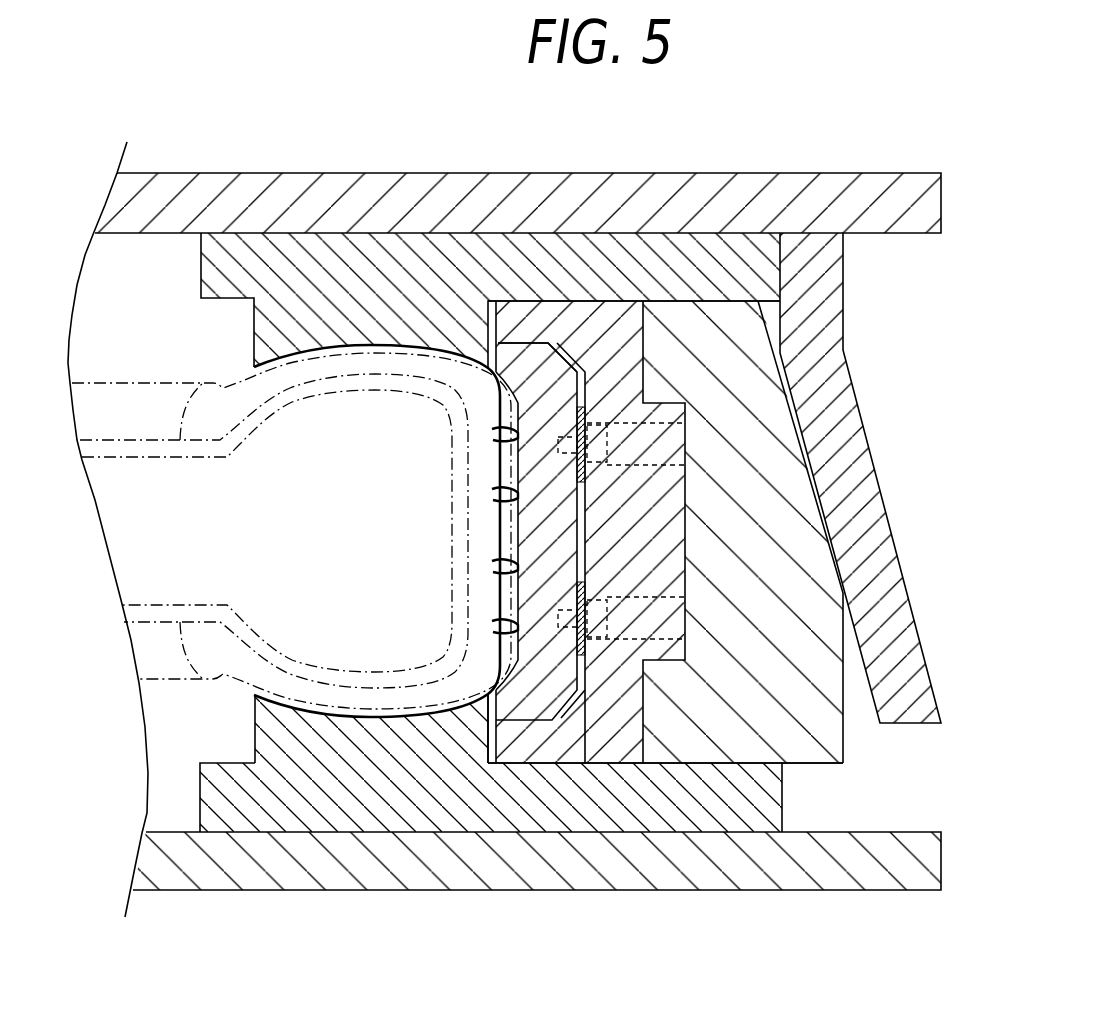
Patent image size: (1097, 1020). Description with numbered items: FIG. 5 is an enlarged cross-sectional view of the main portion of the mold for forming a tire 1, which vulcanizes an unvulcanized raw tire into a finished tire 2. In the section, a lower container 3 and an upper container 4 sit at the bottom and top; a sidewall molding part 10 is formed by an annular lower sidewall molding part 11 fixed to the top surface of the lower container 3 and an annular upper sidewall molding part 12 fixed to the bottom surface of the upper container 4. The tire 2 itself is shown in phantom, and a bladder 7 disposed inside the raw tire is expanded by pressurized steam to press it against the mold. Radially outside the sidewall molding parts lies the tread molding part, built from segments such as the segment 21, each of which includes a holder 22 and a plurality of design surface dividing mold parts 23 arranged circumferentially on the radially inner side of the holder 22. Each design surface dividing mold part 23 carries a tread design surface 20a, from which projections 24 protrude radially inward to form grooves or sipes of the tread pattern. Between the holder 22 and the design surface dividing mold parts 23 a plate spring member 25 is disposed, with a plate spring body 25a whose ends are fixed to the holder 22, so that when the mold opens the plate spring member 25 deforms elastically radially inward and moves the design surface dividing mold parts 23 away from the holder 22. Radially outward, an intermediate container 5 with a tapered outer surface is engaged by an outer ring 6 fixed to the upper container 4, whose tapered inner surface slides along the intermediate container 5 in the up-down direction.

The mold for forming a tire 1 is at (995, 172).
The tire 2 is at (203, 681).
The lower container 3 is at (410, 880).
The upper container 4 is at (395, 192).
The intermediate container 5 is at (847, 747).
The outer ring 6 is at (900, 540).
The bladder 7 is at (151, 614).
The sidewall molding part 10 is at (198, 790).
The lower sidewall molding part 11 is at (253, 727).
The upper sidewall molding part 12 is at (253, 340).
The tread design surface 20a is at (507, 525).
The segment 21 is at (613, 299).
The holder 22 is at (577, 299).
The design surface dividing mold part 23 is at (530, 341).
The projection 24 is at (494, 435).
The plate spring member 25 is at (586, 411).
The plate spring body 25a is at (584, 466).